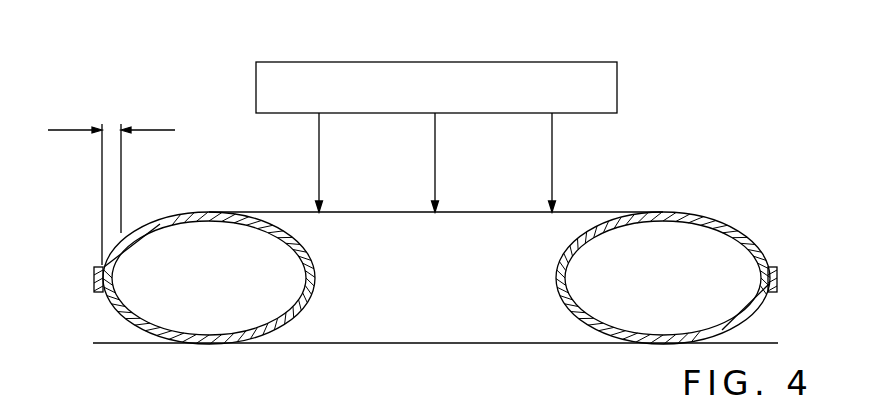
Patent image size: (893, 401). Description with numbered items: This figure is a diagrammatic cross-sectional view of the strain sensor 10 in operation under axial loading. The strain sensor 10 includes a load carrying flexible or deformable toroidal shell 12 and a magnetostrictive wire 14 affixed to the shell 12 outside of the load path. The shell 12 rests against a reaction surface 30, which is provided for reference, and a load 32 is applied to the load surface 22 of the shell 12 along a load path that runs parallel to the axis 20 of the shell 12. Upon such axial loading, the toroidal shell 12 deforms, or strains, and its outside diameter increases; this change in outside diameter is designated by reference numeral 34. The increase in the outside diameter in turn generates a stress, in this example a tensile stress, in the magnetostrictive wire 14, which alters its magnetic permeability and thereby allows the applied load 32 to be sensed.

The strain sensor 10 is at (469, 236).
The toroidal shell 12 is at (725, 222).
The magnetostrictive wire 14 is at (780, 267).
The axis 20 is at (319, 160).
The load surface 22 is at (600, 210).
The reaction surface 30 is at (104, 343).
The load 32 is at (298, 62).
The change in outside diameter 34 is at (112, 130).